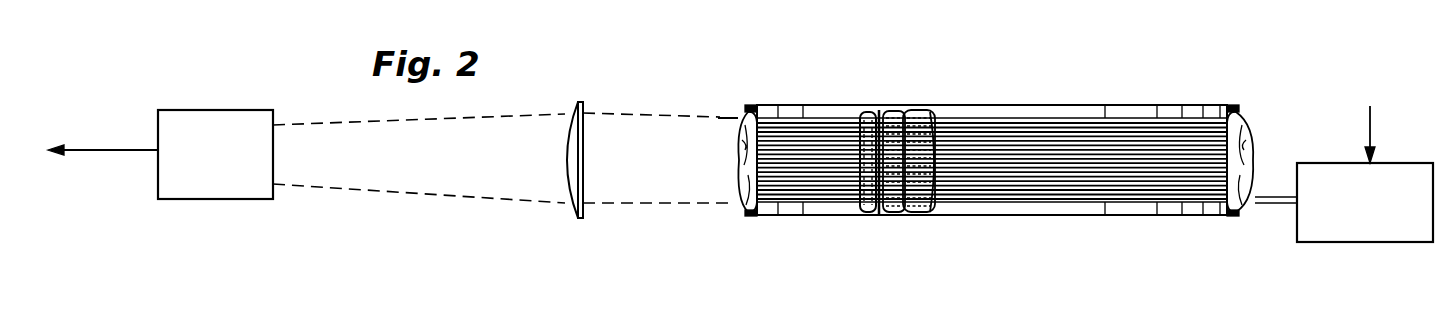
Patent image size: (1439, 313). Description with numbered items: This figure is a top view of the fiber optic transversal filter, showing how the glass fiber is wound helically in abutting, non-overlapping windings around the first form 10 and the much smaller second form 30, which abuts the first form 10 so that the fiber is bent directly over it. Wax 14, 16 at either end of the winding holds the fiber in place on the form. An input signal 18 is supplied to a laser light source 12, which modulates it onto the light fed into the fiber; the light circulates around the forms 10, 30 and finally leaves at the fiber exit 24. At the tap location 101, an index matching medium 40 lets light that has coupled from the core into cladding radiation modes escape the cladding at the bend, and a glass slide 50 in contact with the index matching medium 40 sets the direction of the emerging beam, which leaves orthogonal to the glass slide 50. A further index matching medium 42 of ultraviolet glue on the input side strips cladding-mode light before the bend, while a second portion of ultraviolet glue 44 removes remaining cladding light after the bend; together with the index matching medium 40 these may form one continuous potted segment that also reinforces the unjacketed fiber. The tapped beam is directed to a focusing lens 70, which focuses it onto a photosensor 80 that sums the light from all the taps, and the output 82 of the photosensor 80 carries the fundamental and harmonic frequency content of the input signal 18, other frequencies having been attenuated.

The first form 10 is at (1128, 217).
The laser light source 12 is at (1377, 243).
The wax 14 is at (1248, 137).
The wax 16 is at (746, 207).
The input signal 18 is at (1372, 128).
The fiber exit 24 is at (728, 116).
The second form 30 is at (911, 110).
The index matching medium 40 is at (893, 212).
The index matching medium 42 is at (936, 114).
The ultraviolet glue 44 is at (863, 213).
The glass slide 50 is at (879, 112).
The focusing lens 70 is at (566, 149).
The photosensor 80 is at (215, 200).
The output 82 is at (106, 148).
The tap location 101 is at (848, 97).